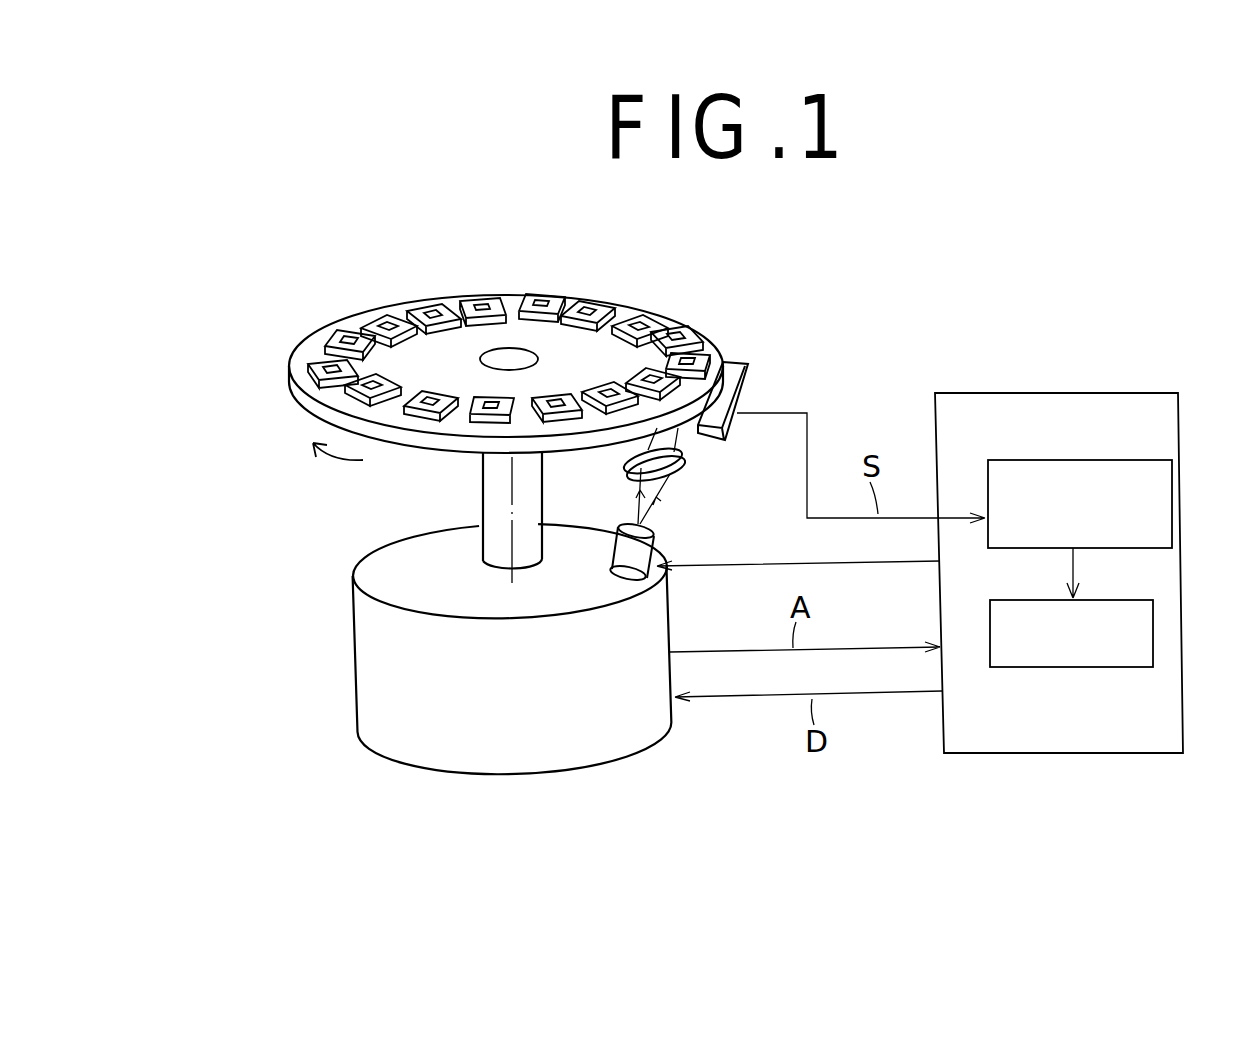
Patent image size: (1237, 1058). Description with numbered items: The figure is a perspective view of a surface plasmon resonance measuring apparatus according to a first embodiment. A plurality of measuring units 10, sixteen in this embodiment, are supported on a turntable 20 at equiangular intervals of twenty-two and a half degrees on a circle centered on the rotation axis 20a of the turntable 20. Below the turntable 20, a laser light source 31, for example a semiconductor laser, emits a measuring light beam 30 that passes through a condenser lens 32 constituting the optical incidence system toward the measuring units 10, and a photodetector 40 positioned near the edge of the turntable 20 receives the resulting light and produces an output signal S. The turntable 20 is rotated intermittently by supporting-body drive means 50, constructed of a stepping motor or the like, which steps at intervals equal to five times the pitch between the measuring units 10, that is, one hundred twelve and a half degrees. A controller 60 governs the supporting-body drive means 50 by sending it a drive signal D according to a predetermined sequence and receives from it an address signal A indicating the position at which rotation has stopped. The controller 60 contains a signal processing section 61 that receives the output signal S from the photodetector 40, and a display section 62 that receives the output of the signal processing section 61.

The measuring unit 10 is at (655, 318).
The turntable 20 is at (297, 413).
The rotation axis 20a is at (510, 486).
The measuring light beam 30 is at (645, 512).
The laser light source 31 is at (614, 556).
The condenser lens 32 is at (683, 465).
The photodetector 40 is at (742, 360).
The supporting-body drive means 50 is at (645, 727).
The controller 60 is at (1059, 531).
The signal processing section 61 is at (988, 538).
The display section 62 is at (990, 645).